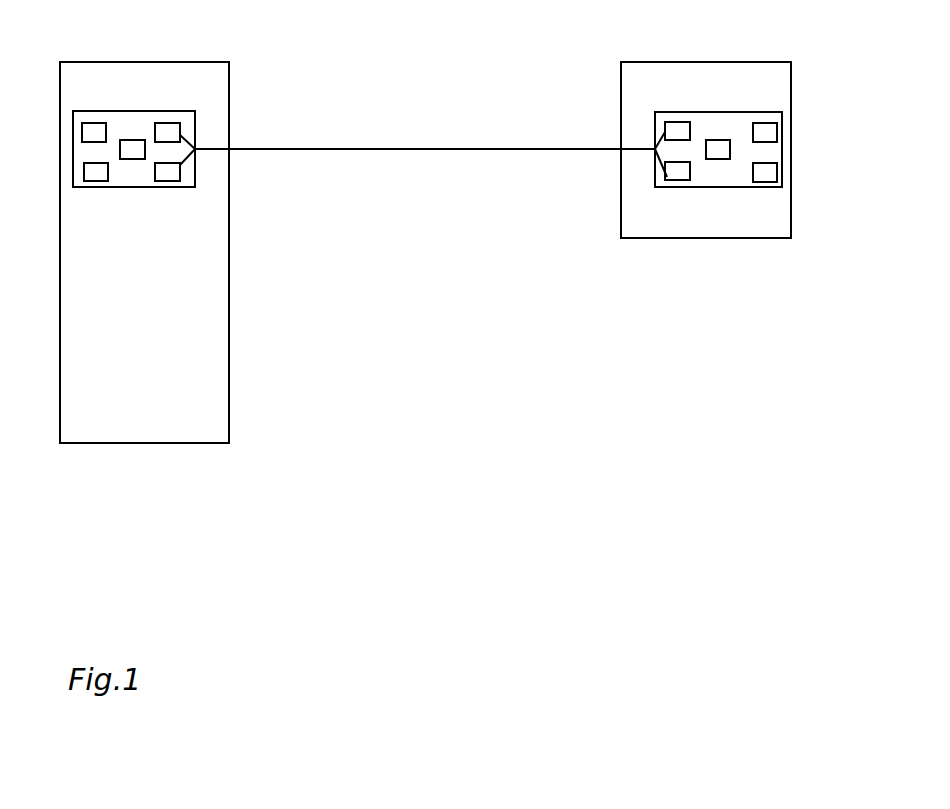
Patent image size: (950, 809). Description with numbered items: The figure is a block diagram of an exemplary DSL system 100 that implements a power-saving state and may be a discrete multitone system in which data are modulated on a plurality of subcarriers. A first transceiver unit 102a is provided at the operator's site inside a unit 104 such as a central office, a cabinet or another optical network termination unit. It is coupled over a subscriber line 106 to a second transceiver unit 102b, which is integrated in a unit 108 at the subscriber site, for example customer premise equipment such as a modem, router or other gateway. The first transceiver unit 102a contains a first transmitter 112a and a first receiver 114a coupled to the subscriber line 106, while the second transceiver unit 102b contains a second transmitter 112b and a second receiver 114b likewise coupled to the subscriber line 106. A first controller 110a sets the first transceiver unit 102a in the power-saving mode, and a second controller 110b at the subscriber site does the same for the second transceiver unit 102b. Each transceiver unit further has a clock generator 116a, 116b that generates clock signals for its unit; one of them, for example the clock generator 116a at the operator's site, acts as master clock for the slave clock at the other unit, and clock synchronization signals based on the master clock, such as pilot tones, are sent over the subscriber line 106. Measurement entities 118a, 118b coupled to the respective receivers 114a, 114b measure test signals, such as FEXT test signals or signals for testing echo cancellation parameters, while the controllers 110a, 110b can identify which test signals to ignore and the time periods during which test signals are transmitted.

The DSL system 100 is at (497, 371).
The first transceiver unit 102a is at (107, 182).
The second transceiver unit 102b is at (713, 182).
The unit 104 is at (215, 313).
The subscriber line 106 is at (382, 149).
The unit 108 is at (635, 227).
The first controller 110a is at (132, 140).
The second controller 110b is at (717, 140).
The first transmitter 112a is at (182, 173).
The second transmitter 112b is at (667, 177).
The first receiver 114a is at (167, 123).
The second receiver 114b is at (668, 122).
The clock generator 116a is at (92, 181).
The clock generator 116b is at (777, 172).
The measurement entity 118a is at (93, 123).
The measurement entity 118b is at (777, 132).